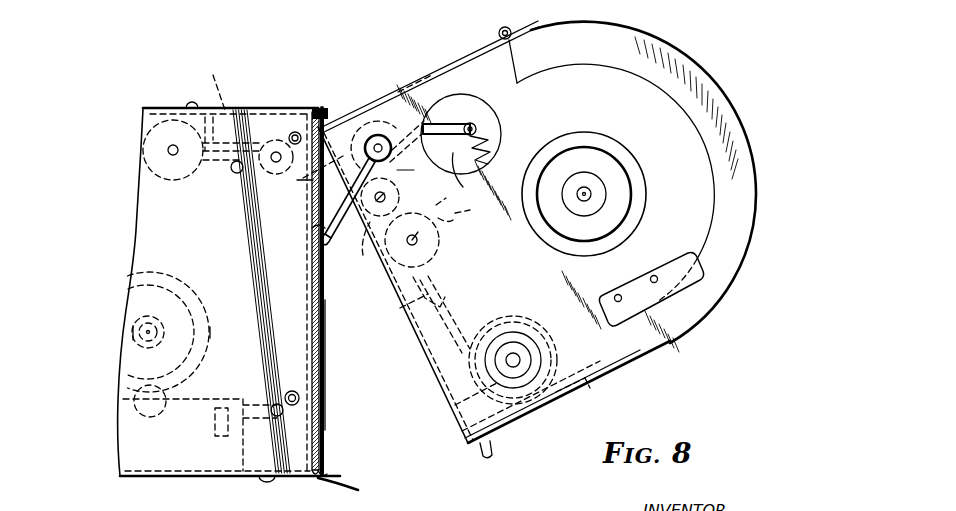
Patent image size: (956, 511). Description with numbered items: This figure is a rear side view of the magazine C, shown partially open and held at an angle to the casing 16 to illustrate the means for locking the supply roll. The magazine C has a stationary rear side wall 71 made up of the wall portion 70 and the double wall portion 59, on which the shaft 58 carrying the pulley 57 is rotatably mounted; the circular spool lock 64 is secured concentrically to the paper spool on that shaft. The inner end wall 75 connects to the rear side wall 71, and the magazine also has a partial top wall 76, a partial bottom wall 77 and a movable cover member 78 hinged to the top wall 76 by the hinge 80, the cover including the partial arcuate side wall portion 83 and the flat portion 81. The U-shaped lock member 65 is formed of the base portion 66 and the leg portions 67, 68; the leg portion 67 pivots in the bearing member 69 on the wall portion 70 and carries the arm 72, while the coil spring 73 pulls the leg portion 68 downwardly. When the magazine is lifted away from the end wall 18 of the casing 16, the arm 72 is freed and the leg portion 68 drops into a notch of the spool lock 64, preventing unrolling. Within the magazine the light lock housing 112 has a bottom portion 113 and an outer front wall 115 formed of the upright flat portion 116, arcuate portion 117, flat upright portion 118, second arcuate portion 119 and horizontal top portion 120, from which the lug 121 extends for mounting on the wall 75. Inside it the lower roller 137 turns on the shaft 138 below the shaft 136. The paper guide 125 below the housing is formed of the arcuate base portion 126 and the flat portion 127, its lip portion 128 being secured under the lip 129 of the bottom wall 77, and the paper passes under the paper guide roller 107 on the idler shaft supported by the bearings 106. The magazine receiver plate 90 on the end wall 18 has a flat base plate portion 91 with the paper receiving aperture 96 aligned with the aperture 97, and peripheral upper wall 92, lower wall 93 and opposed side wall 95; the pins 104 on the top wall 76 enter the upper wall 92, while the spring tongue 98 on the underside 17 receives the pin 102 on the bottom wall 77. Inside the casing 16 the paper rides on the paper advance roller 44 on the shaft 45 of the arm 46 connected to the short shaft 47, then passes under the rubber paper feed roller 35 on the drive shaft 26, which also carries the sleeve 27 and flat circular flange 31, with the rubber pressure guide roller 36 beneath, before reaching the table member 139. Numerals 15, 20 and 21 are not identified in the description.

The hinge 80 is at (508, 27).
The magazine C is at (730, 73).
The partial arcuate side wall portion 83 is at (740, 158).
The cover member 78 is at (767, 189).
The pulley 57 is at (638, 192).
The double wall portion 59 is at (569, 107).
The shaft 58 is at (578, 194).
The bearing member 69 is at (379, 133).
The rear stationary side wall 71 is at (360, 112).
The partial top wall 76 is at (402, 90).
The U-shaped lock member 65 is at (444, 112).
The leg portion 68 is at (473, 118).
The base portion 66 is at (453, 124).
The coil spring 73 is at (497, 140).
The flat upright portion 118 is at (471, 180).
The horizontal top portion 120 is at (376, 138).
The second arcuate portion 119 is at (406, 139).
The leg portion 67 is at (354, 144).
The wall portion 70 is at (407, 161).
The arcuate portion 117 is at (441, 170).
The outer front wall 115 is at (452, 189).
The circular spool lock 64 is at (466, 200).
The shaft 136 is at (380, 197).
The shaft 138 is at (412, 240).
The upright flat portion 116 is at (452, 220).
The light lock housing 112 is at (460, 238).
The lower roller 137 is at (447, 253).
The bottom portion 113 is at (446, 283).
The flat portion 127 is at (460, 314).
The paper guide roller 107 is at (505, 332).
The inner end wall 75 is at (404, 308).
The arm 72 is at (348, 201).
The paper guide 125 is at (455, 358).
The arcuate base portion 126 is at (460, 414).
The bearings 106 is at (505, 385).
The pin 102 is at (486, 455).
The flat portion 81 is at (517, 440).
The partial bottom wall 77 is at (521, 425).
The lip 129 is at (572, 380).
The lip portion 128 is at (592, 383).
The magazine receiver plate 90 is at (334, 388).
The opposed side wall 95 is at (329, 436).
The lower wall 93 is at (327, 473).
The spring tongue 98 is at (338, 494).
The paper receiving aperture 96 is at (312, 234).
The aperture 97 is at (312, 253).
The flat base plate portion 91 is at (312, 279).
The end wall 18 is at (312, 292).
The screw 15 is at (294, 391).
The lug 121 is at (292, 184).
The arm 46 is at (270, 146).
The short shaft 47 is at (292, 134).
The cover 21 is at (217, 108).
The shaft 45 is at (172, 151).
The paper advance roller 44 is at (150, 174).
The housing 20 is at (157, 233).
The flat circular flange 31 is at (207, 300).
The rubber paper feed roller 35 is at (198, 333).
The drive shaft 26 is at (135, 333).
The sleeve or flange support 27 is at (138, 338).
The rubber pressure guide roller 36 is at (174, 395).
The table member 139 is at (188, 410).
The underside 17 is at (178, 472).
The casing 16 is at (128, 447).
The pin 104 is at (320, 108).
The upper wall 92 is at (333, 110).